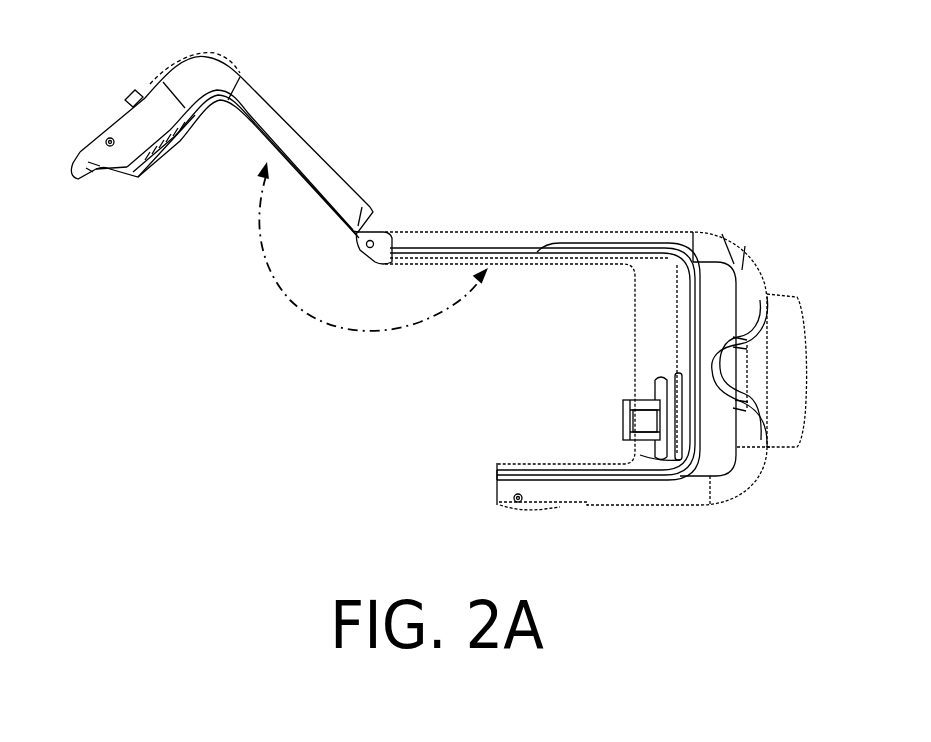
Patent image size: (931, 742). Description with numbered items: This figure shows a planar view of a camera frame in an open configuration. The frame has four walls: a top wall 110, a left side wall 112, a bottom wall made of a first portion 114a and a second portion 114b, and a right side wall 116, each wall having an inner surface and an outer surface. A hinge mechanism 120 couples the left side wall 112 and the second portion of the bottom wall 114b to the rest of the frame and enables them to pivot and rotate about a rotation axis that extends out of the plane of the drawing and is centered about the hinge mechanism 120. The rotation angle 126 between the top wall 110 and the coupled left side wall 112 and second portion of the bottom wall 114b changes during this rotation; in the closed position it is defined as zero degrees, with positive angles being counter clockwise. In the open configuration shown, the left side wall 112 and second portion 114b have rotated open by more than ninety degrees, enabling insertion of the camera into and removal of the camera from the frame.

The top wall 110 is at (445, 222).
The left side wall 112 is at (324, 147).
The first portion of the bottom wall 114a is at (150, 108).
The second portion of the bottom wall 114b is at (592, 528).
The right side wall 116 is at (727, 415).
The hinge mechanism 120 is at (379, 216).
The rotation angle 126 is at (289, 324).